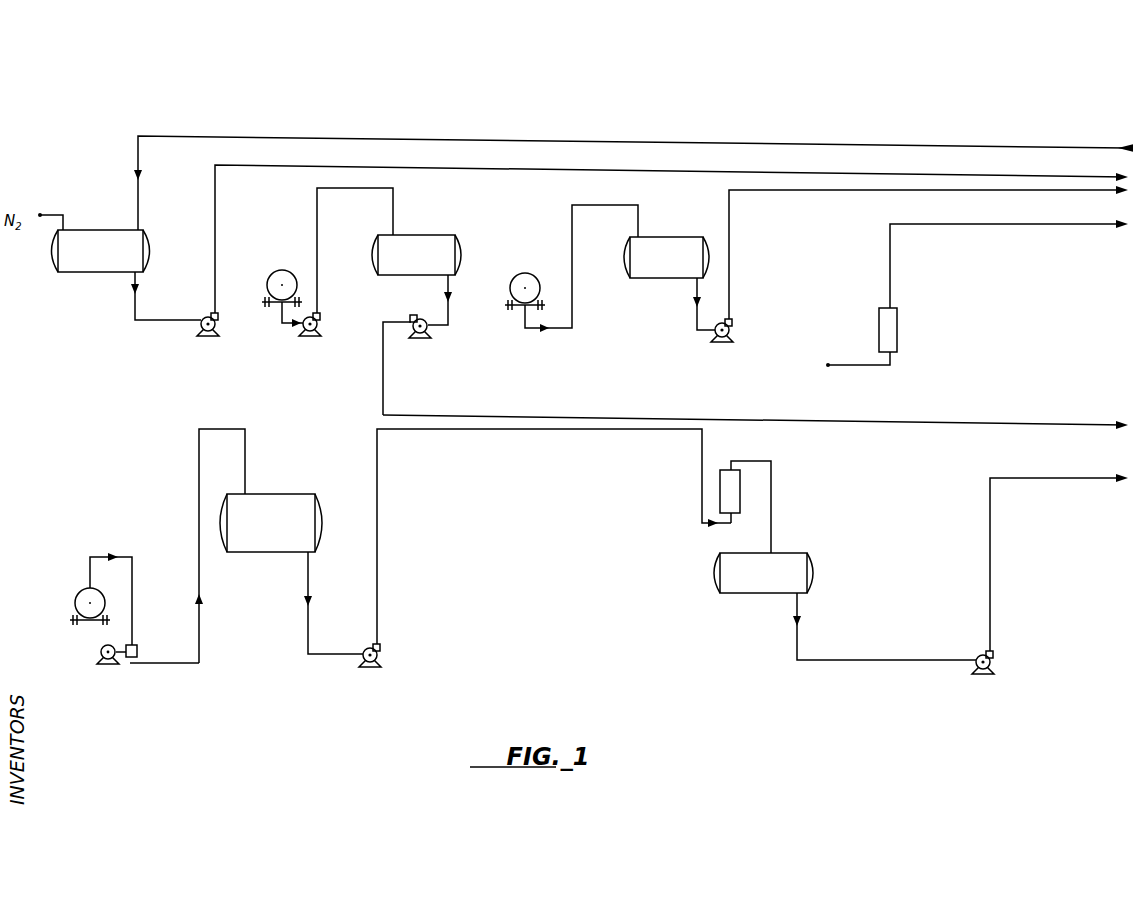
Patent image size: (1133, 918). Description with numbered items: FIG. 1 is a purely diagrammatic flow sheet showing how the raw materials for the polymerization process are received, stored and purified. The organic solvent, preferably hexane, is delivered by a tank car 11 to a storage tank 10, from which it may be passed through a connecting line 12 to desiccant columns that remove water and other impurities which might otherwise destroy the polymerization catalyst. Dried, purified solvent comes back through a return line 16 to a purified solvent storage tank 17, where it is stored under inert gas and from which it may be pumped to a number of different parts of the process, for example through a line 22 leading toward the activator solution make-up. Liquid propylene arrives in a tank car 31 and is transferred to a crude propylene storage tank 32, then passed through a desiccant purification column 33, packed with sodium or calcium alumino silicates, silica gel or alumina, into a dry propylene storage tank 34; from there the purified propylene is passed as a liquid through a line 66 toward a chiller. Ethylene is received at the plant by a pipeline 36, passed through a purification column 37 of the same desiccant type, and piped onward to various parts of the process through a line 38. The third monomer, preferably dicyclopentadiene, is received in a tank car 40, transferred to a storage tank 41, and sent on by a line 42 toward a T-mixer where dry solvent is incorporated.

The storage tank 10 is at (443, 222).
The tank car 11 is at (280, 258).
The connecting line 12 is at (623, 398).
The return line 16 is at (429, 138).
The purified solvent storage tank 17 is at (109, 214).
The line 22 is at (505, 159).
The tank car 31 is at (82, 593).
The crude propylene storage tank 32 is at (306, 473).
The desiccant purification column 33 is at (748, 487).
The dry propylene storage tank 34 is at (802, 540).
The pipeline 36 is at (828, 367).
The purification column 37 is at (899, 331).
The line 38 is at (957, 226).
The tank car 40 is at (538, 262).
The storage tank 41 is at (685, 222).
The line 42 is at (797, 192).
The line 66 is at (1022, 480).